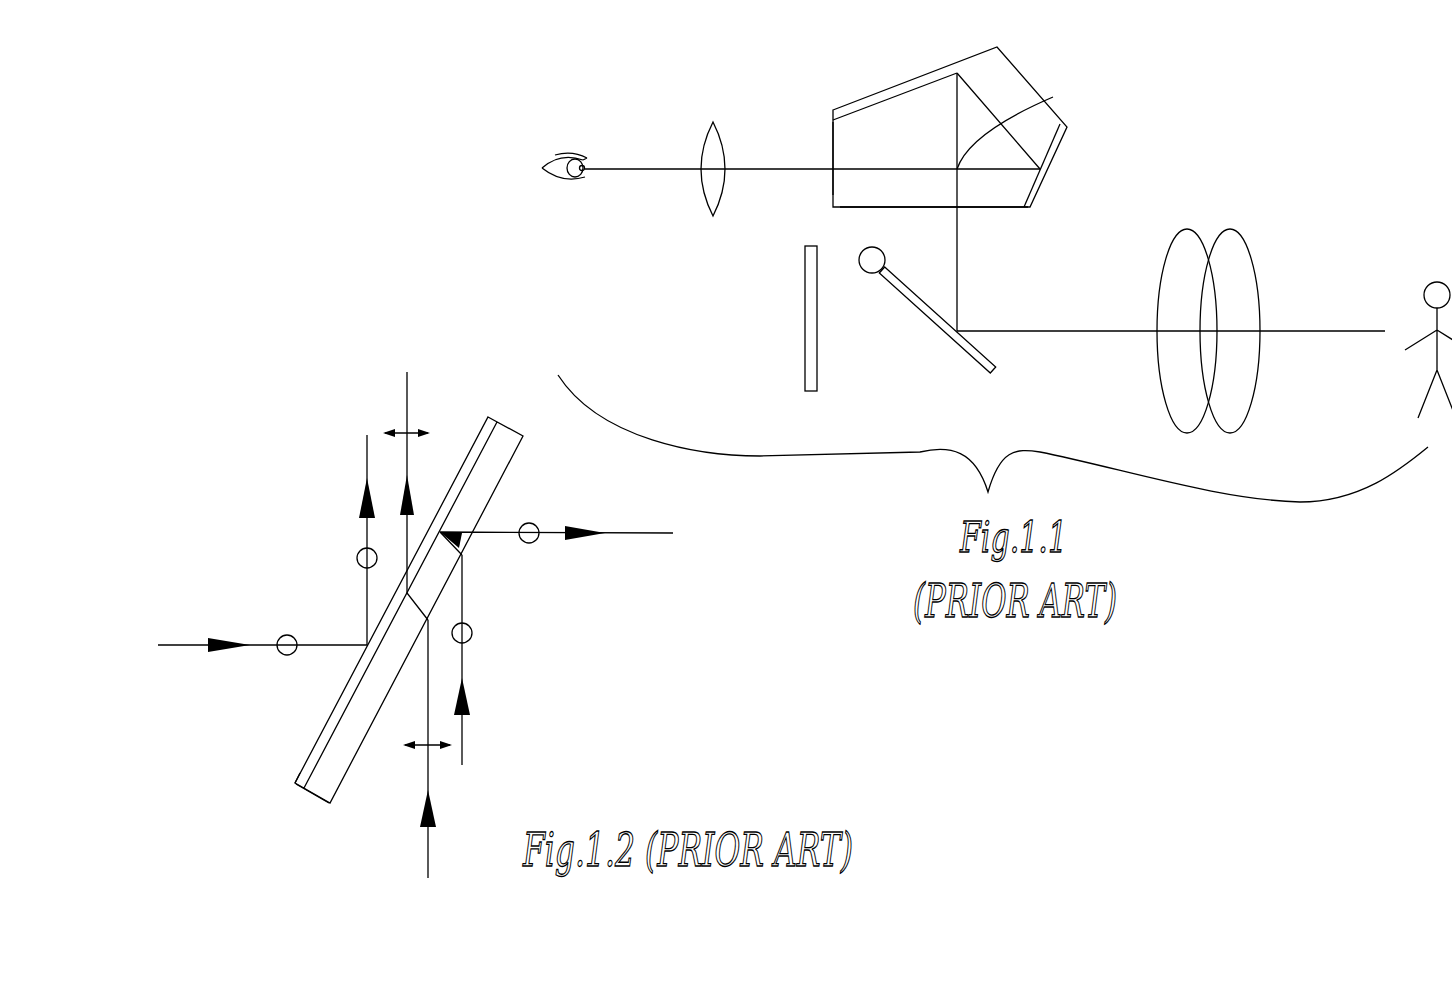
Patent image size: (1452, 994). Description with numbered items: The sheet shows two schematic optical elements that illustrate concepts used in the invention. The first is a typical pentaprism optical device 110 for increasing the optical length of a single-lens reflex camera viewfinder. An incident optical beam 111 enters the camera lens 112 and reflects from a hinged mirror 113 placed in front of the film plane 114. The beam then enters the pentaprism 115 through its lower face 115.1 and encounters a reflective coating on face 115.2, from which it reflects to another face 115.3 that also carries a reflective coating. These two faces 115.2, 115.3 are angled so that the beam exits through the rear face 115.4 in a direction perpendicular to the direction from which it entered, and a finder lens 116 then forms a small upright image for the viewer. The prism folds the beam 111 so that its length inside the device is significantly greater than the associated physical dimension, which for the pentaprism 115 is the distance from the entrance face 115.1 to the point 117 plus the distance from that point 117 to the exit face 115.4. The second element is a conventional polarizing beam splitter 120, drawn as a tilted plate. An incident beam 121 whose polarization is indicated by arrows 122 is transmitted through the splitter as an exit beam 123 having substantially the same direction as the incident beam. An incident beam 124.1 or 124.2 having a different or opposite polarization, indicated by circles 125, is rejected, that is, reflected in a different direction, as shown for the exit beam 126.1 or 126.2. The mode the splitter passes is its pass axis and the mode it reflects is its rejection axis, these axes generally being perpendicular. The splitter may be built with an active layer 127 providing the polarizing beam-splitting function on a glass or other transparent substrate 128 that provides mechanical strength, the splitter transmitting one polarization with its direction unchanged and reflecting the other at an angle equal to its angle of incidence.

In FIG. 1.1, the pentaprism optical device 110 is at (1302, 108).
In FIG. 1.1, the incident optical beam 111 is at (1358, 331).
In FIG. 1.1, the camera lens 112 is at (1228, 228).
In FIG. 1.1, the hinged mirror 113 is at (963, 353).
In FIG. 1.1, the film plane 114 is at (805, 335).
In FIG. 1.1, the pentaprism 115 is at (1027, 73).
In FIG. 1.1, the lower face 115.1 is at (995, 208).
In FIG. 1.1, the face 115.2 is at (922, 77).
In FIG. 1.1, the face 115.3 is at (1055, 158).
In FIG. 1.1, the rear face 115.4 is at (833, 138).
In FIG. 1.1, the finder lens 116 is at (712, 125).
In FIG. 1.1, the point 117 is at (1033, 103).
In FIG. 1.2, the polarizing beam splitter 120 is at (521, 414).
In FIG. 1.2, the incident beam 121 is at (430, 858).
In FIG. 1.2, the arrows 122 is at (442, 752).
In FIG. 1.2, the exit beam 123 is at (407, 387).
In FIG. 1.2, the incident beam 124.1 is at (193, 645).
In FIG. 1.2, the incident beam 124.2 is at (463, 733).
In FIG. 1.2, the circles 125 is at (293, 642).
In FIG. 1.2, the exit beam 126.1 is at (367, 452).
In FIG. 1.2, the exit beam 126.2 is at (657, 533).
In FIG. 1.2, the active layer 127 is at (295, 787).
In FIG. 1.2, the transparent substrate 128 is at (317, 800).